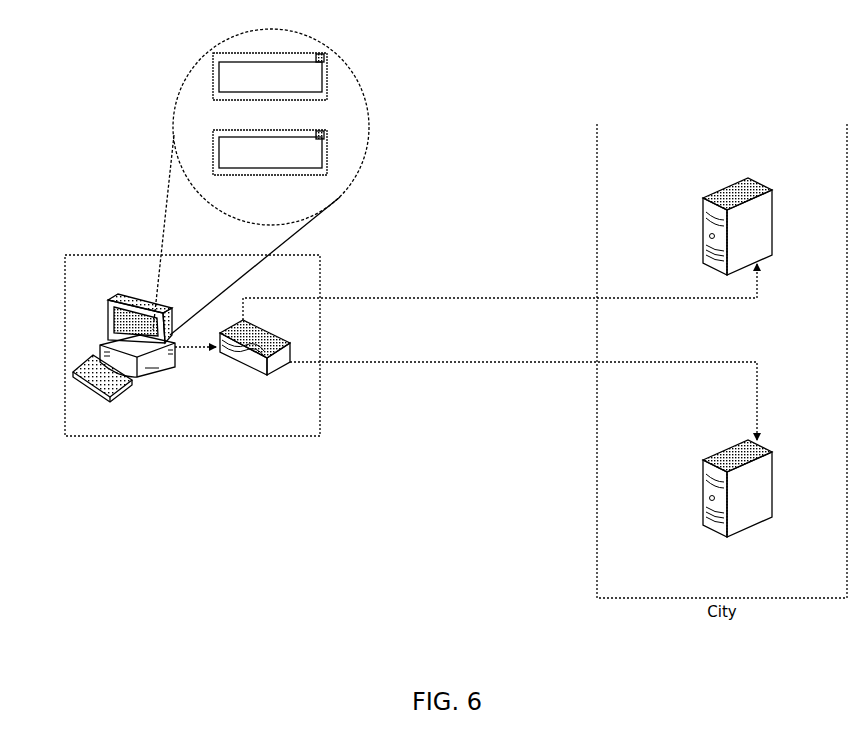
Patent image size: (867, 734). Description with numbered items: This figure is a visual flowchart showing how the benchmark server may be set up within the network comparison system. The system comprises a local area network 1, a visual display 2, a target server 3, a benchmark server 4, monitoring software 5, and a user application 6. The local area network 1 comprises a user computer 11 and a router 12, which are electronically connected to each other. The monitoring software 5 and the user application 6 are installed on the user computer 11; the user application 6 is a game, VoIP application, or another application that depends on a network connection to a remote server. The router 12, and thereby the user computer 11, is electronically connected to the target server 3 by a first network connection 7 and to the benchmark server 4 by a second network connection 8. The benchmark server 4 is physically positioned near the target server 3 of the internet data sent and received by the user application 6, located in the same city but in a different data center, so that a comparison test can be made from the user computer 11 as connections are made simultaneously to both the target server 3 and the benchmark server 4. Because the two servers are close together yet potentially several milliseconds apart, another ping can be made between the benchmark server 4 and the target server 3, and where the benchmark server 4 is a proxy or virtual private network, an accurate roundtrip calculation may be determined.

The local area network 1 is at (184, 472).
The visual display 2 is at (115, 300).
The target server 3 is at (703, 212).
The benchmark server 4 is at (703, 493).
The monitoring software 5 is at (215, 71).
The user application 6 is at (220, 148).
The first network connection 7 is at (443, 290).
The second network connection 8 is at (440, 372).
The user computer 11 is at (100, 340).
The router 12 is at (268, 330).